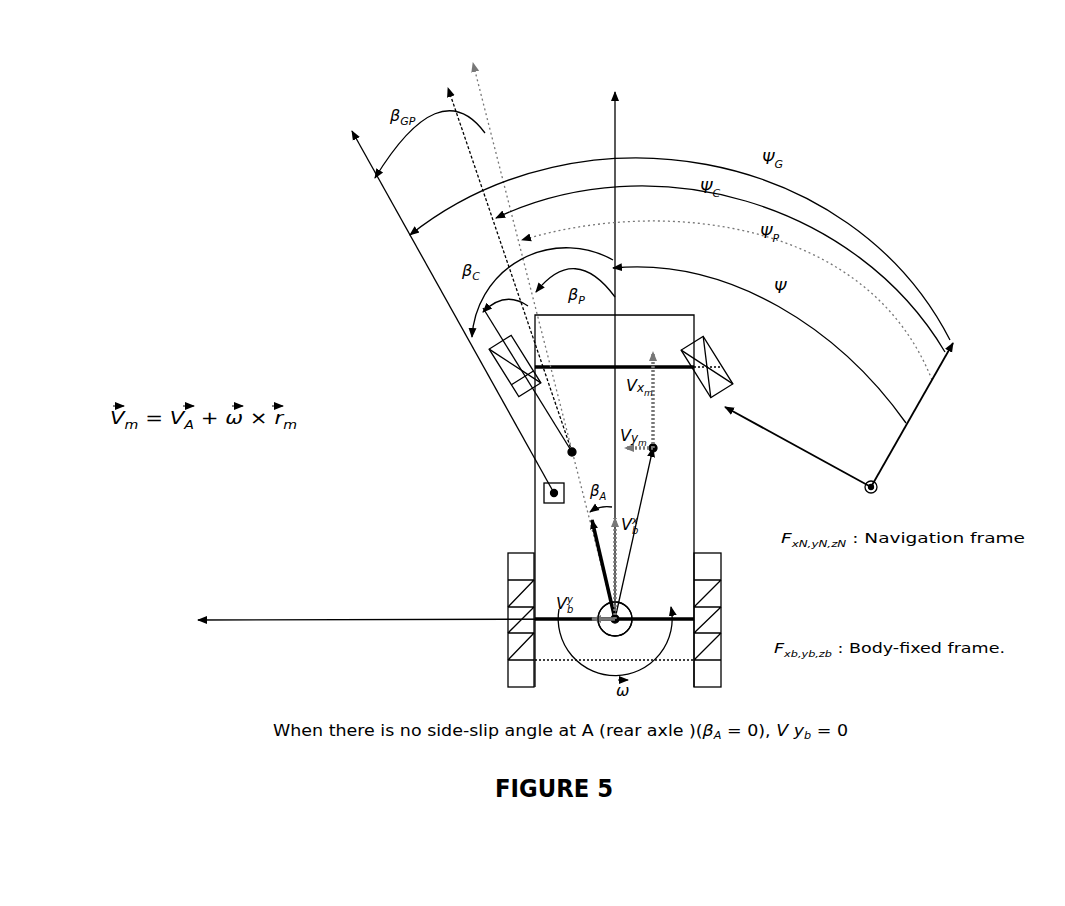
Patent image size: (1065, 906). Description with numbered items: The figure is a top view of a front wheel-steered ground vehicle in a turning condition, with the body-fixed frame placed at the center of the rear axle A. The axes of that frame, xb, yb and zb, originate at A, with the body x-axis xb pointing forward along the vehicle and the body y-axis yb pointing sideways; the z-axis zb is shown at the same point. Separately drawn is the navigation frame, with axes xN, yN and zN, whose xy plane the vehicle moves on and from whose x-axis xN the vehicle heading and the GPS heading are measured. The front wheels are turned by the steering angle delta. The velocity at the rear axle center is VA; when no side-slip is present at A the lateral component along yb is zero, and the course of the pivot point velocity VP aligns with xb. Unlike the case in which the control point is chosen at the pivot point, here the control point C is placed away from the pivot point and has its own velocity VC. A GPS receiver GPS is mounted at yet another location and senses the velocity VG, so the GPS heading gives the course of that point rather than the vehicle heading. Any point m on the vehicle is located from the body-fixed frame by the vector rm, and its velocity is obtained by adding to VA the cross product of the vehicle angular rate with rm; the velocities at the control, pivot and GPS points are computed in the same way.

The center of the rear axle A is at (407, 592).
The point on the vehicle m is at (663, 450).
The control point C is at (572, 452).
The global positioning system GPS is at (544, 490).
The steering angle delta is at (347, 330).
The body-fixed frame x-axis xb is at (628, 351).
The body-fixed frame y-axis yb is at (406, 637).
The body-fixed frame z-axis zb is at (620, 628).
The navigation frame x-axis xN is at (924, 415).
The navigation frame y-axis yN is at (798, 447).
The navigation frame z-axis zN is at (880, 499).
The velocity at the GPS point VG is at (330, 112).
The velocity at the point C VC is at (433, 66).
The velocity at the point P VP is at (482, 36).
The velocity at the point A VA is at (577, 534).
The vector from vehicle frame to a chosen control point rm is at (669, 476).